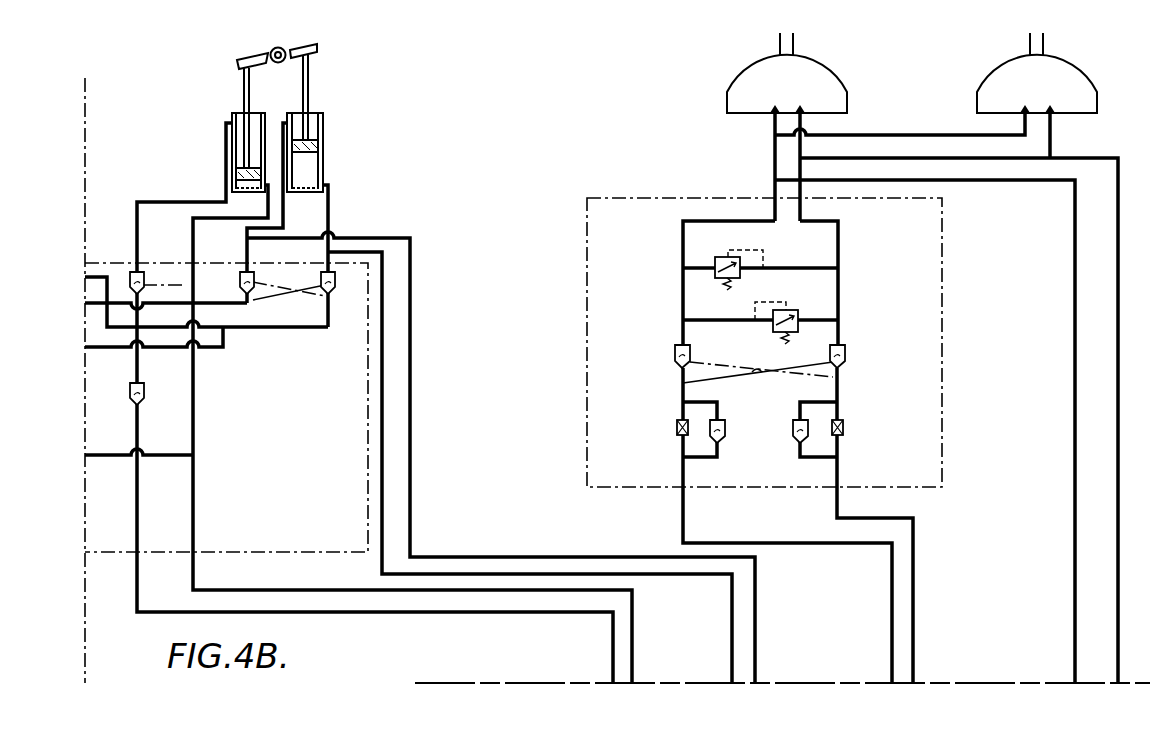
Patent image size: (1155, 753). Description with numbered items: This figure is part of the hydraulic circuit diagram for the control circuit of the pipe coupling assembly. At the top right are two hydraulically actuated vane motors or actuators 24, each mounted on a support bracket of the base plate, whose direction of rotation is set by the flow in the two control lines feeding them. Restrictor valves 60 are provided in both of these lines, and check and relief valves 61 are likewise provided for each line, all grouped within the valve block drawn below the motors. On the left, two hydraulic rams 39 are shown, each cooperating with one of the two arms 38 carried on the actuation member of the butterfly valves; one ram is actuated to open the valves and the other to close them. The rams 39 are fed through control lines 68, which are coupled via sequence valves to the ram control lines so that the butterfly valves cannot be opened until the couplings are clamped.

The vane motor 24 is at (830, 98).
The arm 38 is at (247, 61).
The hydraulic ram 39 is at (232, 151).
The restrictor valve 60 is at (677, 427).
The check and relief valve 61 is at (715, 273).
The control line 68 is at (412, 462).